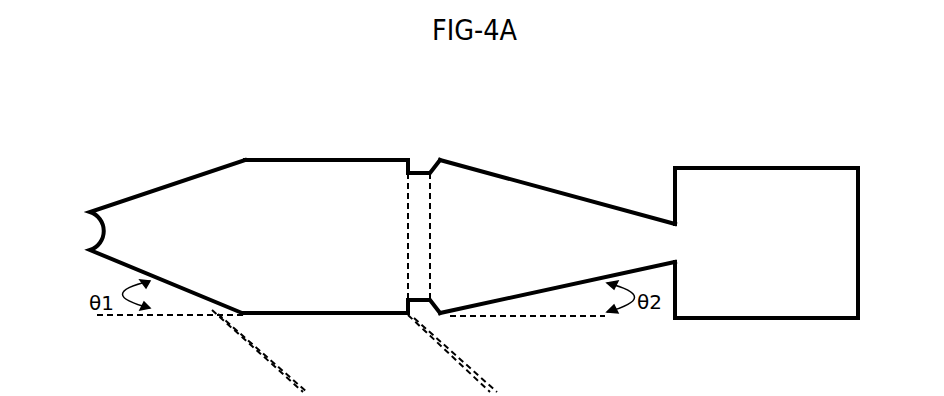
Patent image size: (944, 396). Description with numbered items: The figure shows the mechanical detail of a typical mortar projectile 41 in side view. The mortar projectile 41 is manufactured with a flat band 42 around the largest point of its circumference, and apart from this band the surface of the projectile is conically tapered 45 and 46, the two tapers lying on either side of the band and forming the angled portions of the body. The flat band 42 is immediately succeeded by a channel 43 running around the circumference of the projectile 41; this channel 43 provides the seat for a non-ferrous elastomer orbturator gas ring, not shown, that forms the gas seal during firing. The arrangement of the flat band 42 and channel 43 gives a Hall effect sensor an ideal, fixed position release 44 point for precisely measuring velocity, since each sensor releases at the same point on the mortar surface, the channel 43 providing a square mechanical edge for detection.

The mortar projectile 41 is at (469, 194).
The flat band 42 is at (300, 160).
The channel 43 is at (422, 172).
The fixed position release point 44 is at (408, 273).
The conically tapered surface 45 is at (88, 317).
The conically tapered surface 46 is at (657, 315).